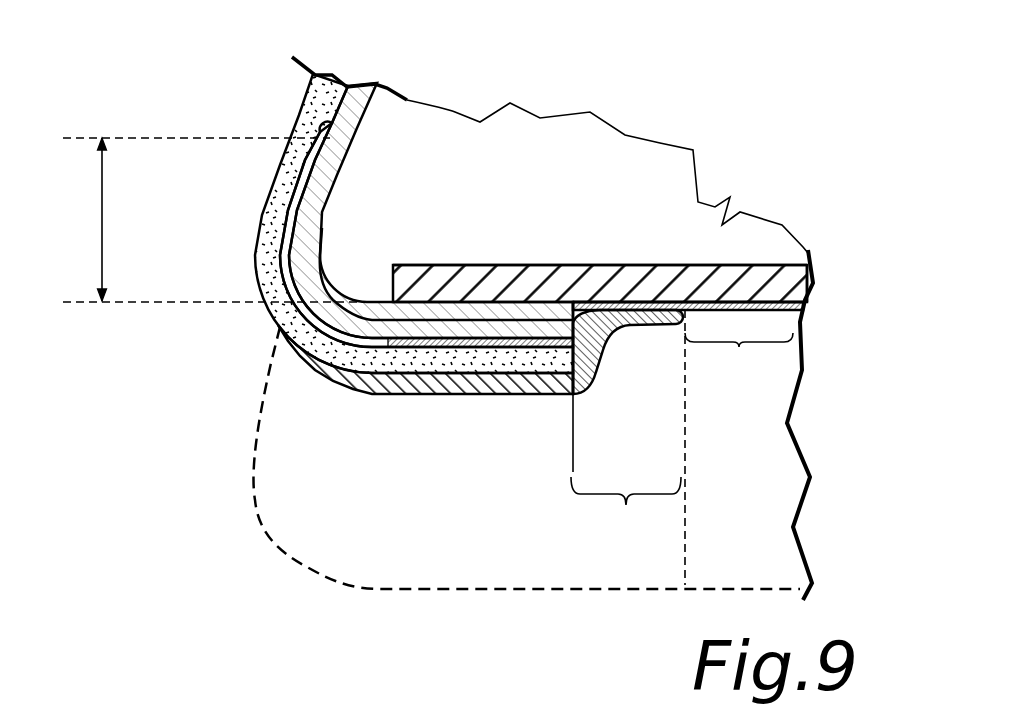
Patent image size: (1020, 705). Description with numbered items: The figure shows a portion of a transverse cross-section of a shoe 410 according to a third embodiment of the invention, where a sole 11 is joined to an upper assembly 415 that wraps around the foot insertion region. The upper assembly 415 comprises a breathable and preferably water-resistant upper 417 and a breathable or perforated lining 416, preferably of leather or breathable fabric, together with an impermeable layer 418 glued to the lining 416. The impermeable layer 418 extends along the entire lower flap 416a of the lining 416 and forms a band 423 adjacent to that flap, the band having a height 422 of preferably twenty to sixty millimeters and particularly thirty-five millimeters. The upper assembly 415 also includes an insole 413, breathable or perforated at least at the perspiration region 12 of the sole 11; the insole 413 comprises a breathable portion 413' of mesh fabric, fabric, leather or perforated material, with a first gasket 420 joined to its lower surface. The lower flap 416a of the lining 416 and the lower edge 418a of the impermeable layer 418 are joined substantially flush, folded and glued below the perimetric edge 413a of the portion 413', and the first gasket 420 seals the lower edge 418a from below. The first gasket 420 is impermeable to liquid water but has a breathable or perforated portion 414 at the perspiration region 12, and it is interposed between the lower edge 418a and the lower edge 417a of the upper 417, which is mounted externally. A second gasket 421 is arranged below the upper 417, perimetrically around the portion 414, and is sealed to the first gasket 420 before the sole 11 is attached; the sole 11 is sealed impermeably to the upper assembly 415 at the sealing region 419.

The shoe 410 is at (776, 205).
The sole 11 is at (268, 378).
The perspiration region 12 is at (762, 478).
The insole 413 is at (600, 200).
The perimetric edge 413a is at (462, 282).
The portion 413' is at (838, 262).
The breathable or perforated portion 414 is at (739, 447).
The upper assembly 415 is at (261, 247).
The lining 416 is at (343, 113).
The lower flap 416a is at (488, 308).
The upper 417 is at (266, 217).
The lower edge 417a is at (498, 363).
The impermeable layer 418 is at (303, 163).
The lower edge 418a is at (567, 333).
The sealing region 419 is at (626, 468).
The first gasket 420 is at (632, 303).
The second gasket 421 is at (630, 338).
The height 422 is at (102, 206).
The band 423 is at (322, 222).